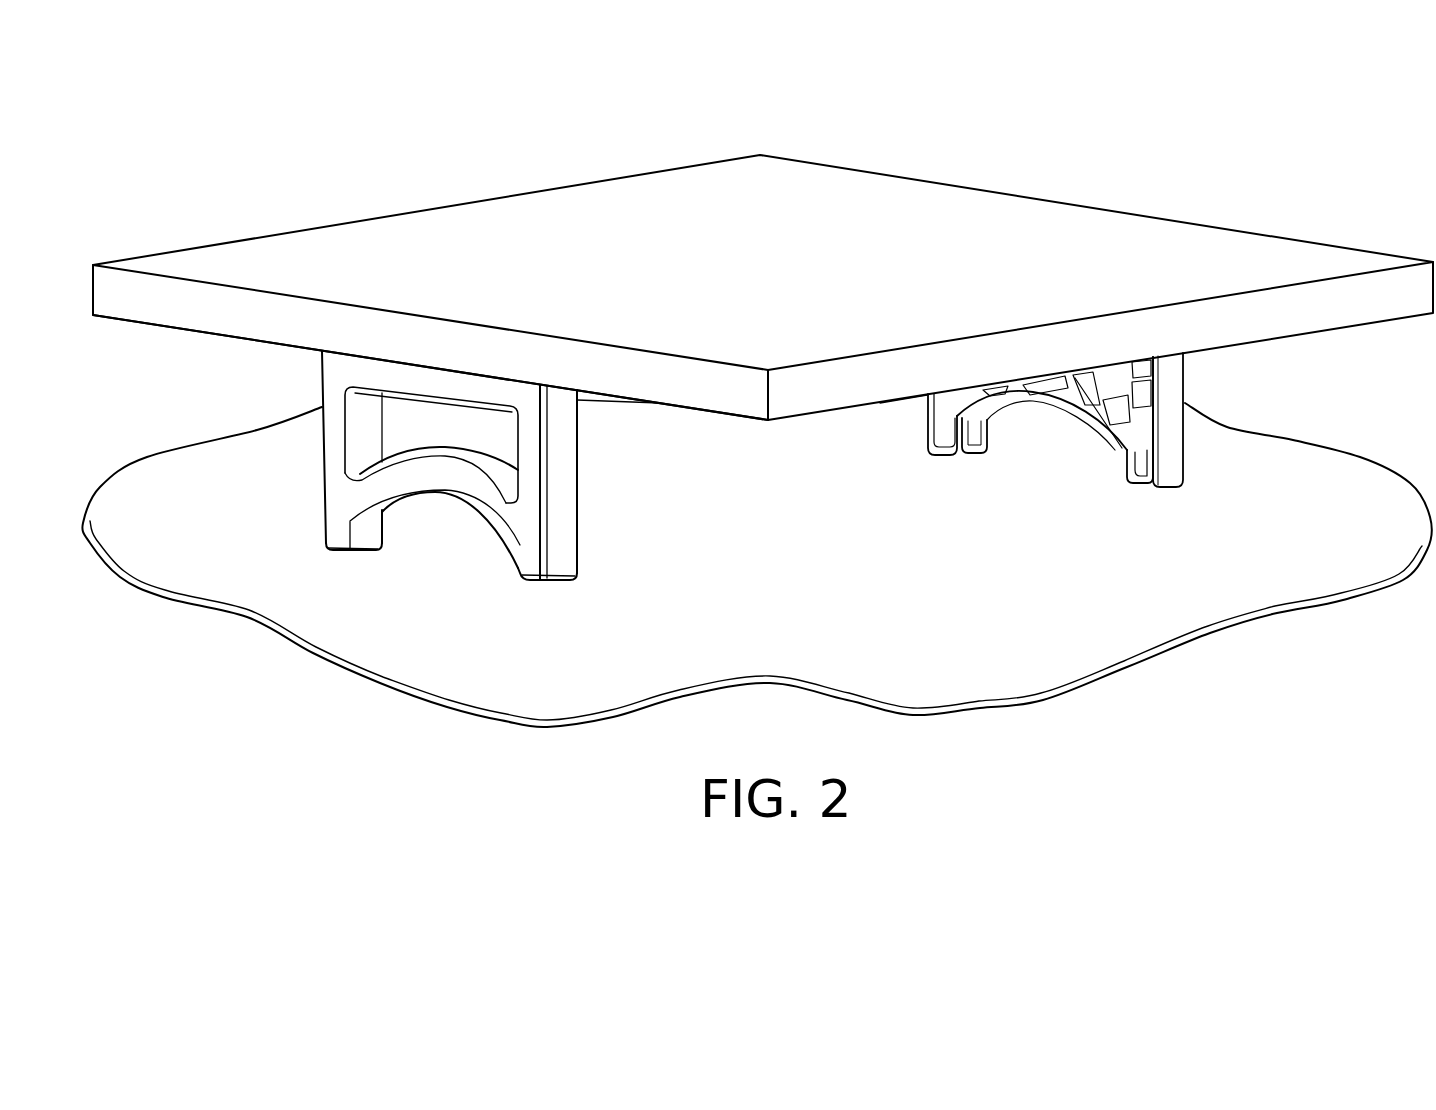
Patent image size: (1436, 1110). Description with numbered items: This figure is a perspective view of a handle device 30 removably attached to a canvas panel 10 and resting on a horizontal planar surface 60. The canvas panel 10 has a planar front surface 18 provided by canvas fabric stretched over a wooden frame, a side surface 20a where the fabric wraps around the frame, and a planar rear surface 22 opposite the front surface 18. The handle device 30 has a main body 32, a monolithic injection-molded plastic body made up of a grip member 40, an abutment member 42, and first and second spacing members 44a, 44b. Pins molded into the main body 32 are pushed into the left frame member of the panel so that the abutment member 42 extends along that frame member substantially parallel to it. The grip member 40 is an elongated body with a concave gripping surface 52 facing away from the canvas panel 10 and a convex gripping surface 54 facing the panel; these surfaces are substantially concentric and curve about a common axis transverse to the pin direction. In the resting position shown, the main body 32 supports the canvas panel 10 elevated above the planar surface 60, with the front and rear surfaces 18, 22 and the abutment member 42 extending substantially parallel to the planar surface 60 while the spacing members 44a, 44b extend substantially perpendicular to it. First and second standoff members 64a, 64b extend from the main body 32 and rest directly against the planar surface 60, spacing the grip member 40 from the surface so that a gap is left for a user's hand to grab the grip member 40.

The canvas panel 10 is at (947, 196).
The planar front surface 18 is at (629, 216).
The side surface 20a is at (206, 312).
The planar rear surface 22 is at (270, 344).
The handle device 30 is at (273, 491).
The main body 32 is at (576, 414).
The grip member 40 is at (482, 516).
The abutment member 42 is at (452, 407).
The first spacing member 44a is at (320, 440).
The second spacing member 44b is at (566, 457).
The concave gripping surface 52 is at (437, 499).
The convex gripping surface 54 is at (473, 457).
The horizontal planar surface 60 is at (876, 641).
The first standoff member 64a is at (322, 540).
The second standoff member 64b is at (569, 571).